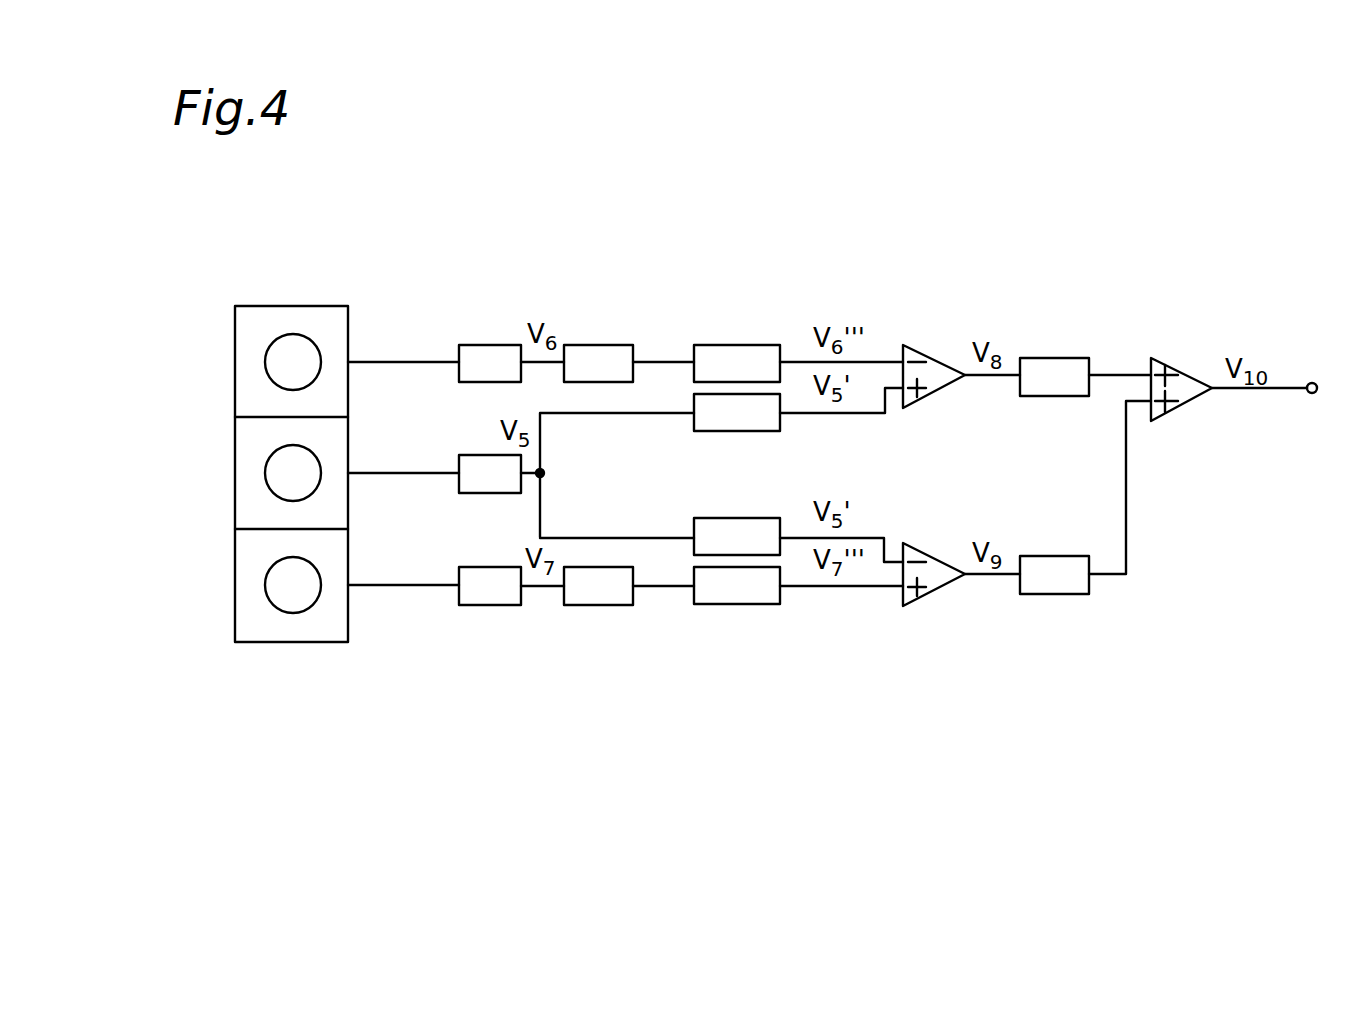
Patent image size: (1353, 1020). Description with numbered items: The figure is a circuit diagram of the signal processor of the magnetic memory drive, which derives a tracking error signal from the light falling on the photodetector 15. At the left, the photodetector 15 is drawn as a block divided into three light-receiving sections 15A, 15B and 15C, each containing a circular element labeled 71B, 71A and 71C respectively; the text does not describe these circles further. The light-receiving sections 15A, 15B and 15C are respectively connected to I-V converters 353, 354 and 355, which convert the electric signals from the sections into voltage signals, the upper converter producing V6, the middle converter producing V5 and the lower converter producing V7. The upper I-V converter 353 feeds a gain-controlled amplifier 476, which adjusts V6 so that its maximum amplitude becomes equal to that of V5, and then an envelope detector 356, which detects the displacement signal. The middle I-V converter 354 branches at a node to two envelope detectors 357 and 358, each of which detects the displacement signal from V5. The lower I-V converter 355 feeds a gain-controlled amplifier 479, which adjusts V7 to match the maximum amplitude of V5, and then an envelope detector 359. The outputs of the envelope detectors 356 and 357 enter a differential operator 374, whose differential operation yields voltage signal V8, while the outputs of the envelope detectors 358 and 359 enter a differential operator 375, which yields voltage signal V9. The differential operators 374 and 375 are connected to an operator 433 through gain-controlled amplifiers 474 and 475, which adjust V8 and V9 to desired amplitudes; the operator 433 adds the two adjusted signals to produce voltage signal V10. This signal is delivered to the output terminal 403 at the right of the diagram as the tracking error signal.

The photodetector 15 is at (297, 652).
The light-receiving section 15A is at (248, 324).
The light-receiving section 15B is at (248, 437).
The light-receiving section 15C is at (248, 548).
The light receiving element 71A is at (265, 473).
The light receiving element 71B is at (265, 362).
The light receiving element 71C is at (265, 585).
The I-V converter 353 is at (488, 345).
The I-V converter 354 is at (487, 493).
The I-V converter 355 is at (487, 605).
The envelope detector 356 is at (734, 345).
The envelope detector 357 is at (709, 431).
The envelope detector 358 is at (772, 518).
The envelope detector 359 is at (732, 604).
The differential operator 374 is at (932, 353).
The differential operator 375 is at (932, 553).
The output terminal 403 is at (1315, 382).
The operator 433 is at (1190, 370).
The gain-controlled amplifier 474 is at (1055, 358).
The gain-controlled amplifier 475 is at (1053, 594).
The gain-controlled amplifier 476 is at (597, 345).
The gain-controlled amplifier 479 is at (598, 605).